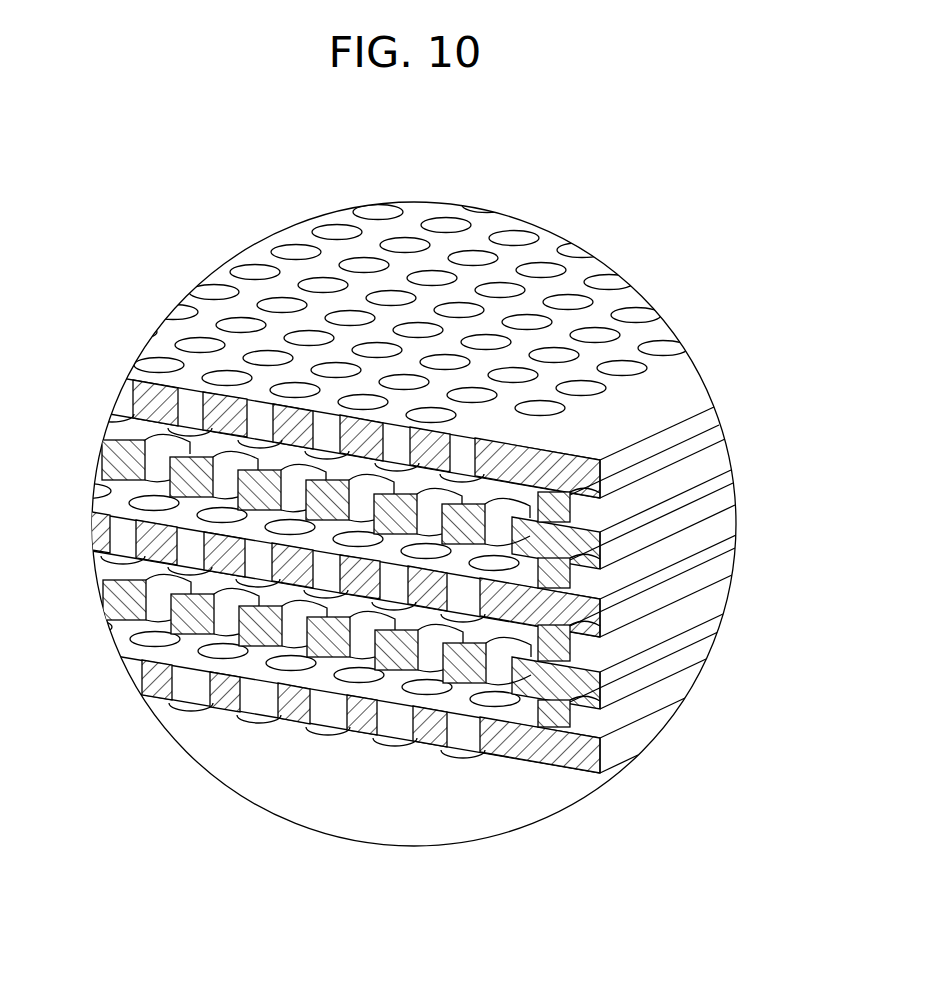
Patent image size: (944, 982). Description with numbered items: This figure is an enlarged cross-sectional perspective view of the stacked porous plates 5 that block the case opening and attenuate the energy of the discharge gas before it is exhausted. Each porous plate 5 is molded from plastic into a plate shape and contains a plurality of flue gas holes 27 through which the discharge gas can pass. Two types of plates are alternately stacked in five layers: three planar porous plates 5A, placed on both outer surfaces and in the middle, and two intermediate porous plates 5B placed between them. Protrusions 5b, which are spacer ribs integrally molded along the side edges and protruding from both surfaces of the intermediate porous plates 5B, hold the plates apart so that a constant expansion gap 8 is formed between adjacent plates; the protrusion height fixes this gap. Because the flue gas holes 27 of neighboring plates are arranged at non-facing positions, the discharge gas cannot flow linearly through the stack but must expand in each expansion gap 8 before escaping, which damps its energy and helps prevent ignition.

The porous plate 5 is at (410, 564).
The planar porous plate 5A is at (152, 612).
The intermediate porous plate 5B is at (198, 628).
The protrusion 5b is at (553, 513).
The expansion gap 8 is at (133, 438).
The flue gas hole 27 is at (318, 278).